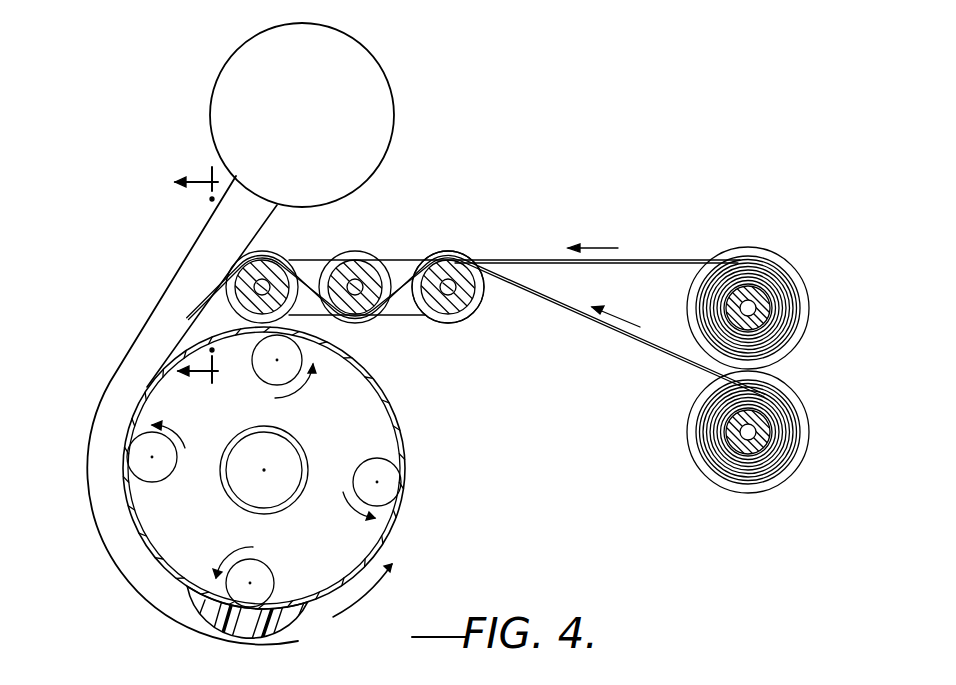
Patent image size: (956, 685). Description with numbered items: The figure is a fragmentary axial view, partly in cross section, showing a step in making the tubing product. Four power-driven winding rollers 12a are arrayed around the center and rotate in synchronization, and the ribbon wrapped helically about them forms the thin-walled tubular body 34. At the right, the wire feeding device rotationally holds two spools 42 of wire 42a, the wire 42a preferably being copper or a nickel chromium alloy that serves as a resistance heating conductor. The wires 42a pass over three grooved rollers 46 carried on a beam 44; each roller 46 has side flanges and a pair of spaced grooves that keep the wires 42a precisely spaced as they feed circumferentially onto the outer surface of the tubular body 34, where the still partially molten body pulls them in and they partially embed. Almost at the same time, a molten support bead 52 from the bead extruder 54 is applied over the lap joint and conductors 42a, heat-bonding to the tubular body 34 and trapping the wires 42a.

The bead extruder 54 is at (378, 156).
The support bead 52 is at (190, 258).
The wire 42a is at (307, 283).
The grooved rollers 46 is at (364, 272).
The beam 44 is at (413, 263).
The spool 42 is at (793, 338).
The thin-walled tubular body 34 is at (404, 438).
The winding rollers 12a is at (272, 376).